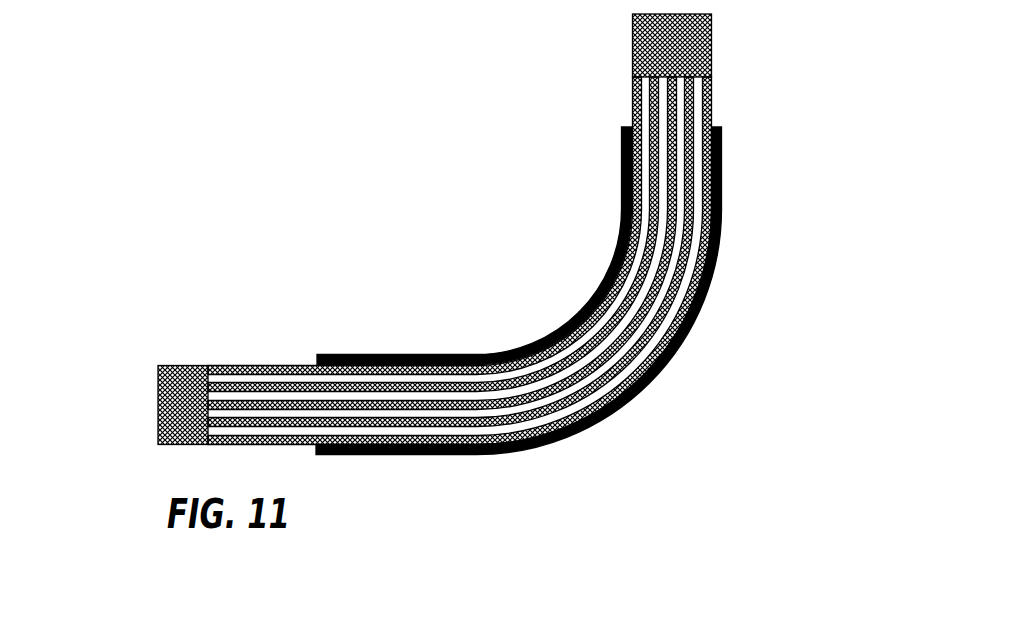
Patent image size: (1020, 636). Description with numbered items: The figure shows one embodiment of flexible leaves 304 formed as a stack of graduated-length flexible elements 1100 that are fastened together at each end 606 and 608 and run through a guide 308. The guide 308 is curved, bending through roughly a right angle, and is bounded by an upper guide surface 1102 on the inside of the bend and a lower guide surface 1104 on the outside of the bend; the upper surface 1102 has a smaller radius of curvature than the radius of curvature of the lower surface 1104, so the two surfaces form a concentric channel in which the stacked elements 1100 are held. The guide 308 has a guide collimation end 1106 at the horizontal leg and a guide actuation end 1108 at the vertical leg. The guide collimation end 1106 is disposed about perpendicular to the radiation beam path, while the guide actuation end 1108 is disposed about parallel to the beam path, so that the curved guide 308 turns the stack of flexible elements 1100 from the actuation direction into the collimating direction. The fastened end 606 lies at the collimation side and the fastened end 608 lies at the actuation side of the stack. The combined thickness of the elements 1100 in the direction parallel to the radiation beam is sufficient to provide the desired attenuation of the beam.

The flexible leaves 304 is at (183, 303).
The guide 308 is at (533, 297).
The end 606 is at (142, 403).
The end 608 is at (618, 65).
The graduated-length flexible elements 1100 is at (713, 89).
The upper guide surface 1102 is at (394, 355).
The lower guide surface 1104 is at (592, 419).
The guide collimation end 1106 is at (318, 354).
The guide actuation end 1108 is at (620, 128).